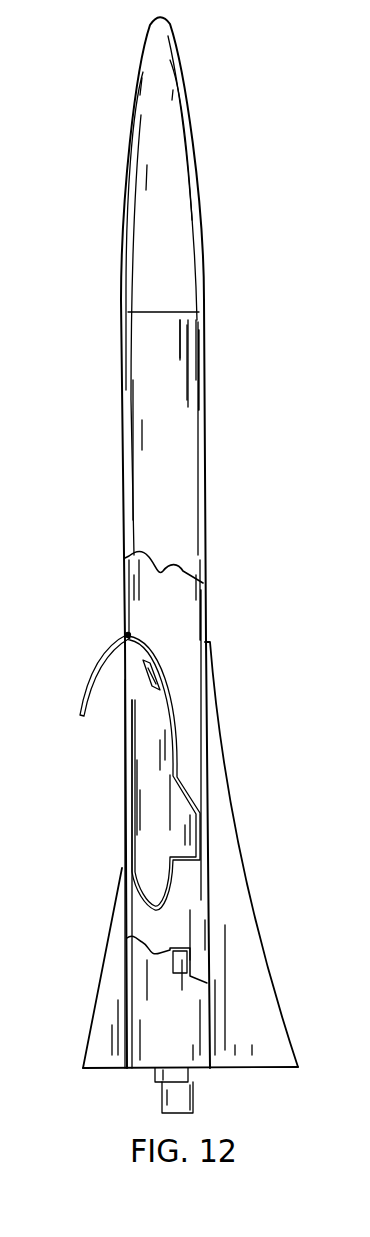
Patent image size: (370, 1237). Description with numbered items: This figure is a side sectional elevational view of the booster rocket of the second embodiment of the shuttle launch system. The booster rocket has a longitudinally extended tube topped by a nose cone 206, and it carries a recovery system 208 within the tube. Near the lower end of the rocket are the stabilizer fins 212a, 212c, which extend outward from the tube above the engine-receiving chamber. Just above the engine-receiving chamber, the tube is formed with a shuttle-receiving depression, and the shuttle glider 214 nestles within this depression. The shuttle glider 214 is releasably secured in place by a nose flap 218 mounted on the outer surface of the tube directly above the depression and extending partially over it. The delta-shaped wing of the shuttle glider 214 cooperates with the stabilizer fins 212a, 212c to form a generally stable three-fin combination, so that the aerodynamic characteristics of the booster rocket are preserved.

The nose cone 206 is at (206, 612).
The recovery system 208 is at (183, 340).
The stabilizer fin 212a is at (255, 947).
The stabilizer fin 212c is at (105, 997).
The shuttle glider 214 is at (160, 783).
The nose flap 218 is at (114, 746).